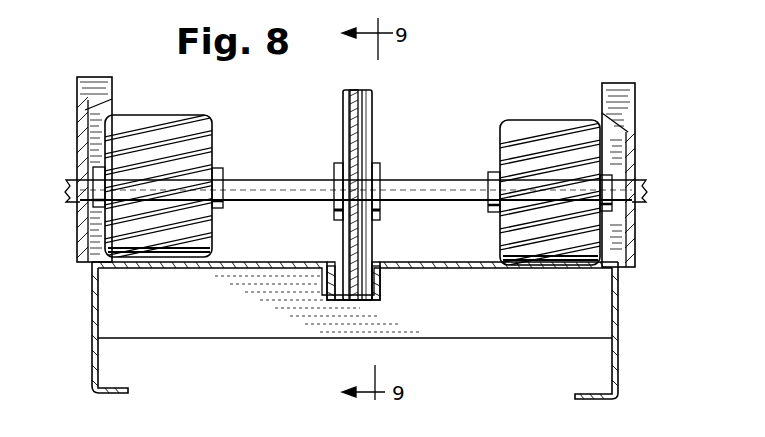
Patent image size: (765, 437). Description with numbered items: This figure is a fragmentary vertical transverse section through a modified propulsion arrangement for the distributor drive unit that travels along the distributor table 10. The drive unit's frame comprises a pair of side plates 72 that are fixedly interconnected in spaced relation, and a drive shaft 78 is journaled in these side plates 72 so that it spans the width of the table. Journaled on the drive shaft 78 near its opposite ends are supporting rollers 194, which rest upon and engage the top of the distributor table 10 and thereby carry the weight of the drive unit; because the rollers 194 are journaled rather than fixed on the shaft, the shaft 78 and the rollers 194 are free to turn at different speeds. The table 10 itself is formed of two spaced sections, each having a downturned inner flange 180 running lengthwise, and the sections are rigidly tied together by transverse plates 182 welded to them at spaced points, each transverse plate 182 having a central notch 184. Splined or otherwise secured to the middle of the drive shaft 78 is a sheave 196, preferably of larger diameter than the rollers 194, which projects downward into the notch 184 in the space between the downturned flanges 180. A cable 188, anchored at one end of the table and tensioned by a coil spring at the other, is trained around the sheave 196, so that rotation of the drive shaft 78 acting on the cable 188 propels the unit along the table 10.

The distributor table 10 is at (421, 262).
The side plates 72 is at (77, 88).
The drive shaft 78 is at (432, 192).
The downturned inner flange 180 is at (330, 282).
The transverse plates 182 is at (504, 334).
The notch 184 is at (375, 302).
The cable 188 is at (355, 90).
The supporting rollers 194 is at (200, 118).
The sheave 196 is at (372, 118).